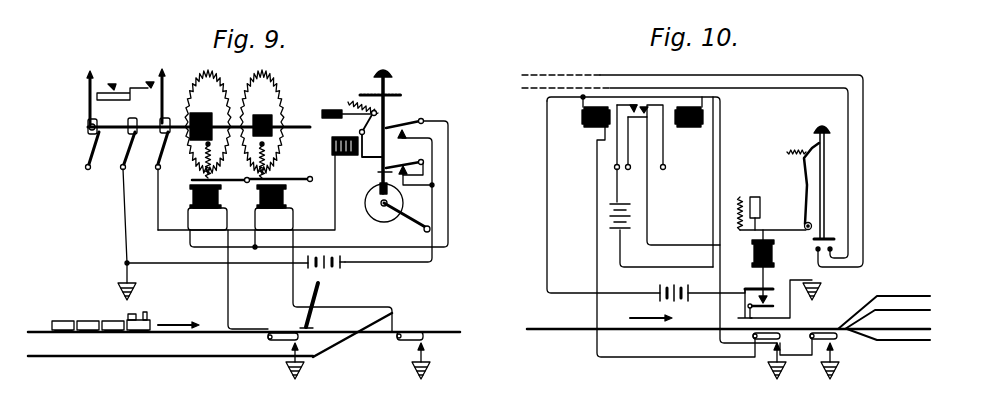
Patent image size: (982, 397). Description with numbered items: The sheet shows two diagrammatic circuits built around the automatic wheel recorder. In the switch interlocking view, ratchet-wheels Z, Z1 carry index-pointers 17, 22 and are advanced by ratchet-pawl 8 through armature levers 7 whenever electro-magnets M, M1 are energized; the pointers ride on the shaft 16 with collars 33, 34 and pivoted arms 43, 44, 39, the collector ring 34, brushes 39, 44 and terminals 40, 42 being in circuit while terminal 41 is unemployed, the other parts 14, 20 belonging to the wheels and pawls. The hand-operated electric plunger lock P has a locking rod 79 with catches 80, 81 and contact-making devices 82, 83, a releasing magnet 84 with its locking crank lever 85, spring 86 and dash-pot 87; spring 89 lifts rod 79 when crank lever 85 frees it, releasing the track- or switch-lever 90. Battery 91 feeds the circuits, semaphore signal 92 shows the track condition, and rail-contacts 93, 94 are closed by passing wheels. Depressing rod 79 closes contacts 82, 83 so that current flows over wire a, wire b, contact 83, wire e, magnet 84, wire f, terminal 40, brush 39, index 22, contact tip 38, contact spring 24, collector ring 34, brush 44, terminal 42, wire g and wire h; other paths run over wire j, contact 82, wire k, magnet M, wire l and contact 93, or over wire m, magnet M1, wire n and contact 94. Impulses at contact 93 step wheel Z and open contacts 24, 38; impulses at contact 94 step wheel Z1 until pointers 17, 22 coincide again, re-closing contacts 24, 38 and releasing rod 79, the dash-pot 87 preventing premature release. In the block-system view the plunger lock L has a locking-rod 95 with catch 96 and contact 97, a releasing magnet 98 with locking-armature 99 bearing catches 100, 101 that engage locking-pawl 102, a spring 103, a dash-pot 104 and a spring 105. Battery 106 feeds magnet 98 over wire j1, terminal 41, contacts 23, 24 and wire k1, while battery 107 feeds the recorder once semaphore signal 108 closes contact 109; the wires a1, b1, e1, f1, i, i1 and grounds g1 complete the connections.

In FIG. 9, the armature lever 7 is at (285, 178).
In FIG. 9, the ratchet-pawl 8 is at (195, 179).
In FIG. 9, the pawl 14 is at (272, 163).
In FIG. 9, the shaft 16 is at (297, 122).
In FIG. 9, the index-pointer 17 is at (89, 89).
In FIG. 9, the ratchet wheel 20 is at (190, 98).
In FIG. 9, the index-pointer 22 is at (200, 80).
In FIG. 9, the contact 23 is at (110, 84).
In FIG. 10, the contact 23 is at (633, 104).
In FIG. 9, the contact spring 24 is at (132, 88).
In FIG. 10, the contact spring 24 is at (640, 137).
In FIG. 9, the collar 33 is at (90, 117).
In FIG. 9, the collector ring 34 is at (86, 130).
In FIG. 9, the contact tip 38 is at (157, 81).
In FIG. 10, the contact tip 38 is at (650, 104).
In FIG. 9, the brush 39 is at (156, 170).
In FIG. 9, the terminal 40 is at (157, 200).
In FIG. 10, the terminal 40 is at (666, 167).
In FIG. 9, the terminal 41 is at (86, 169).
In FIG. 10, the terminal 41 is at (616, 169).
In FIG. 9, the terminal 42 is at (125, 196).
In FIG. 10, the terminal 42 is at (630, 169).
In FIG. 9, the pivot arm 43 is at (94, 145).
In FIG. 9, the brush 44 is at (120, 170).
In FIG. 9, the locking rod 79 is at (396, 97).
In FIG. 9, the catch 80 is at (405, 117).
In FIG. 9, the catch 81 is at (376, 191).
In FIG. 9, the contact-making device 82 is at (423, 118).
In FIG. 9, the contact-making device 83 is at (405, 153).
In FIG. 9, the releasing magnet 84 is at (348, 160).
In FIG. 9, the locking crank lever 85 is at (360, 129).
In FIG. 9, the spring 86 is at (350, 100).
In FIG. 9, the dash-pot 87 is at (325, 108).
In FIG. 9, the spring 89 is at (386, 80).
In FIG. 9, the track- or switch-lever 90 is at (412, 227).
In FIG. 9, the battery 91 is at (345, 266).
In FIG. 9, the semaphore signal 92 is at (312, 300).
In FIG. 9, the rail-contact 93 is at (270, 336).
In FIG. 10, the rail-contact 93 is at (762, 341).
In FIG. 9, the rail-contact 94 is at (405, 338).
In FIG. 10, the rail-contact 94 is at (832, 346).
In FIG. 10, the locking-rod 95 is at (827, 163).
In FIG. 10, the catch 96 is at (813, 143).
In FIG. 10, the contact 97 is at (834, 241).
In FIG. 10, the releasing magnet 98 is at (774, 253).
In FIG. 10, the locking-armature 99 is at (775, 229).
In FIG. 10, the catch 100 is at (813, 188).
In FIG. 10, the catch 101 is at (812, 225).
In FIG. 10, the locking-pawl 102 is at (806, 188).
In FIG. 10, the spring 103 is at (790, 150).
In FIG. 10, the dash-pot 104 is at (755, 196).
In FIG. 10, the spring 105 is at (740, 197).
In FIG. 10, the battery 106 is at (632, 223).
In FIG. 10, the battery 107 is at (668, 294).
In FIG. 10, the semaphore signal 108 is at (750, 290).
In FIG. 10, the contact-making device 109 is at (775, 307).
In FIG. 9, the electro-magnet M is at (194, 196).
In FIG. 10, the electro-magnet M is at (588, 121).
In FIG. 9, the electro-magnet M1 is at (286, 200).
In FIG. 10, the electro-magnet M1 is at (689, 123).
In FIG. 9, the ratchet-wheel Z is at (208, 122).
In FIG. 9, the ratchet-wheel Z1 is at (262, 122).
In FIG. 9, the electric plunger lock P is at (346, 233).
In FIG. 9, the wire a is at (430, 258).
In FIG. 9, the wire b is at (411, 203).
In FIG. 9, the wire e is at (371, 168).
In FIG. 9, the wire f is at (334, 226).
In FIG. 9, the wire g is at (126, 231).
In FIG. 9, the wire h is at (182, 263).
In FIG. 10, the wire h is at (581, 99).
In FIG. 9, the wire j is at (434, 163).
In FIG. 9, the wire k is at (449, 193).
In FIG. 9, the wire l is at (228, 291).
In FIG. 9, the wire m is at (256, 223).
In FIG. 9, the wire n is at (292, 225).
In FIG. 10, the wire a1 is at (552, 273).
In FIG. 10, the wire b1 is at (720, 153).
In FIG. 10, the wire e1 is at (790, 278).
In FIG. 10, the wire f1 is at (712, 294).
In FIG. 10, the ground g1 is at (806, 332).
In FIG. 10, the wire i is at (596, 161).
In FIG. 10, the wire i1 is at (684, 266).
In FIG. 10, the wire j1 is at (608, 185).
In FIG. 10, the wire k1 is at (674, 181).
In FIG. 10, the electric plunger lock L is at (757, 115).